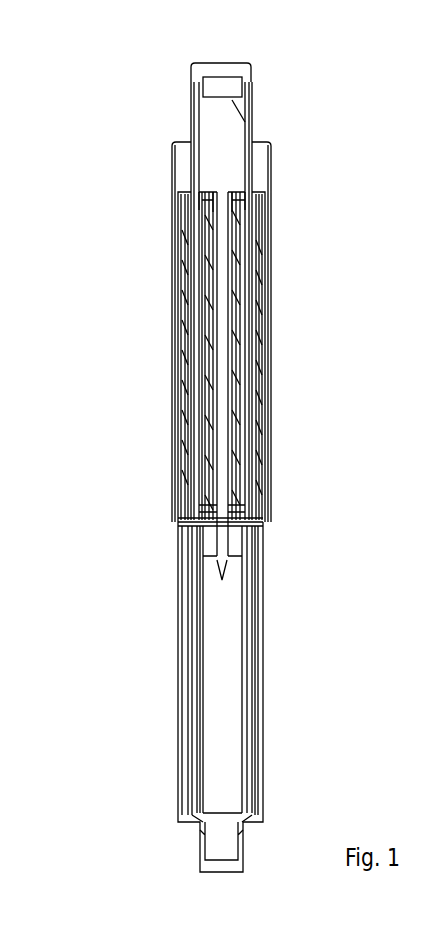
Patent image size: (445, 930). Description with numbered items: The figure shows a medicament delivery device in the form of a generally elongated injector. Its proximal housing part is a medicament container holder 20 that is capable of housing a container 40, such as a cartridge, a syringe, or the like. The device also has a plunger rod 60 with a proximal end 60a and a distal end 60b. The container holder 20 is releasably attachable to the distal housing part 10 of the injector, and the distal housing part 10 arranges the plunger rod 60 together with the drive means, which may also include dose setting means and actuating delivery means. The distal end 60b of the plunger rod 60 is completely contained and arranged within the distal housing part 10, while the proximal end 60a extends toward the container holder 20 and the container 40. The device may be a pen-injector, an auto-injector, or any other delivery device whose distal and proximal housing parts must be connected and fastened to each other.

The distal housing part 10 is at (173, 233).
The medicament container holder 20 is at (180, 733).
The container 40 is at (245, 632).
The plunger rod 60 is at (238, 363).
The proximal end 60a is at (222, 541).
The distal end 60b is at (220, 207).